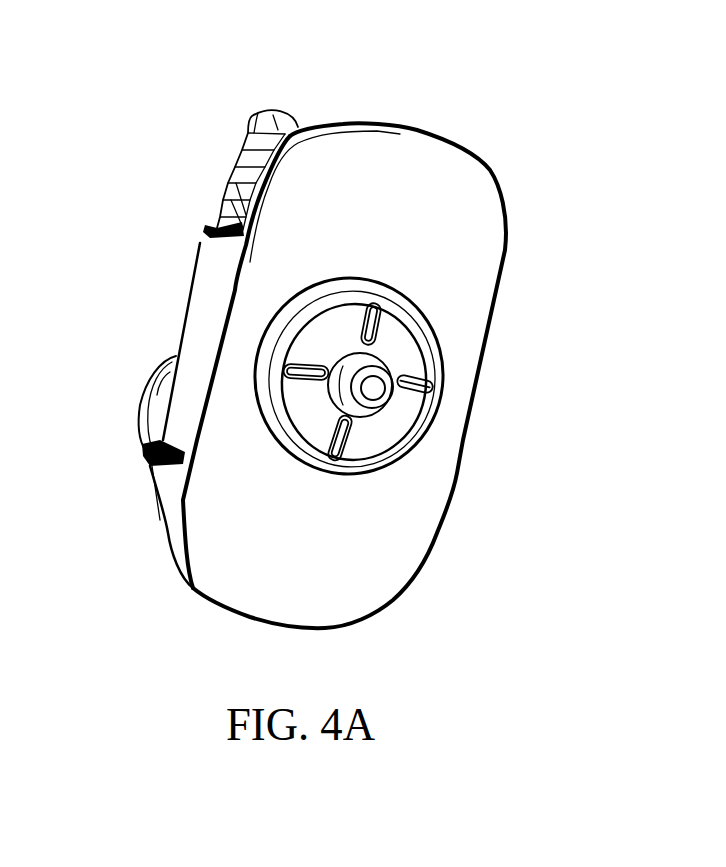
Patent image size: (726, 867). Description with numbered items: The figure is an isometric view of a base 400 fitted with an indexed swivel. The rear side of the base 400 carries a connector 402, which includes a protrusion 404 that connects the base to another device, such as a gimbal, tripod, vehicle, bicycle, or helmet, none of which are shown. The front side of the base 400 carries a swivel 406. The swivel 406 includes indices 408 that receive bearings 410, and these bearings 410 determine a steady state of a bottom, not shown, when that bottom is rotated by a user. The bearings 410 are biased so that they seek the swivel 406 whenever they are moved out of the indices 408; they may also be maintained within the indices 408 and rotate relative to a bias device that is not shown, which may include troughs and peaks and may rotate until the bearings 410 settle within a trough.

The base 400 is at (492, 233).
The connector 402 is at (427, 90).
The protrusion 404 is at (148, 400).
The swivel 406 is at (527, 344).
The indices 408 is at (340, 463).
The bearings 410 is at (425, 402).